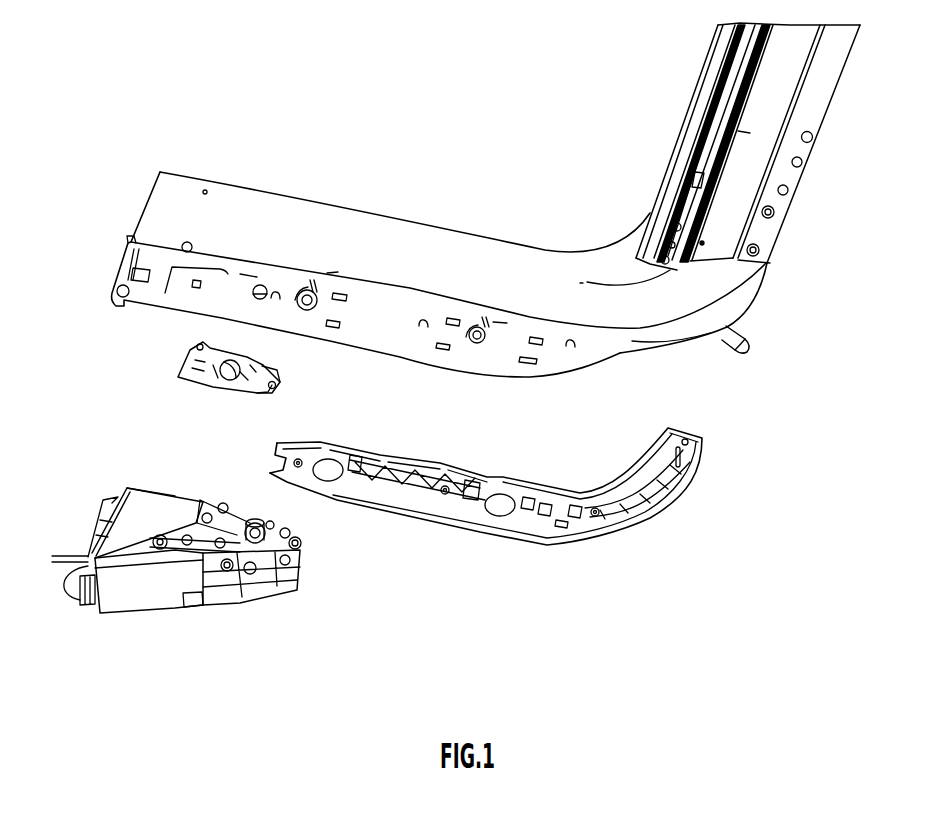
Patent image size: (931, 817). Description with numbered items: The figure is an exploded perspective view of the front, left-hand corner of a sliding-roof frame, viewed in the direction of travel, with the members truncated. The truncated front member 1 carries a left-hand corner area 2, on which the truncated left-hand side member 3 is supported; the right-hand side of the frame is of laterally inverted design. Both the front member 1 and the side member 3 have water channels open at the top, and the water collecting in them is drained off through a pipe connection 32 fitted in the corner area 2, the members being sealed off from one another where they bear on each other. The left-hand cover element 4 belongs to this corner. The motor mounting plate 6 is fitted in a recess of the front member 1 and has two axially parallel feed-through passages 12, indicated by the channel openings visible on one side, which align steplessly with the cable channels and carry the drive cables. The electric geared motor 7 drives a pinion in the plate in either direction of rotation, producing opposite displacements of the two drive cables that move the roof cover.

The front member 1 is at (321, 195).
The corner area 2 is at (756, 309).
The side member 3 is at (689, 94).
The pipe connection 32 is at (728, 338).
The cover element 4 is at (423, 456).
The motor mounting plate 6 is at (191, 389).
The feed-through passages 12 is at (271, 370).
The electric geared motor 7 is at (167, 616).